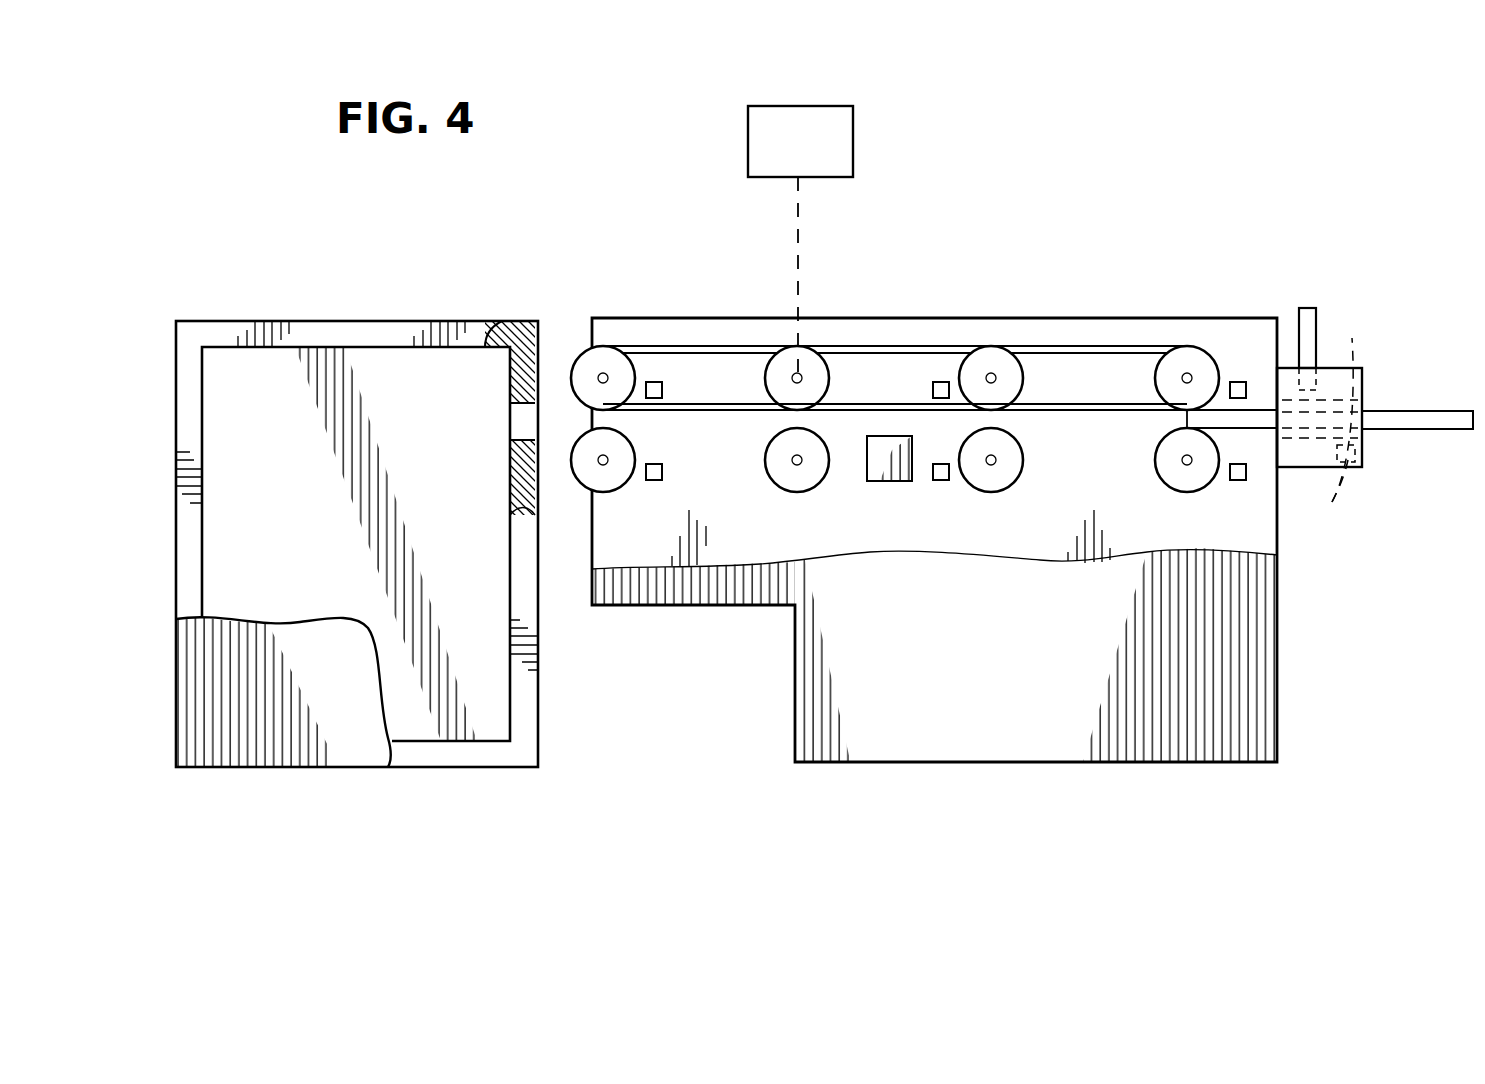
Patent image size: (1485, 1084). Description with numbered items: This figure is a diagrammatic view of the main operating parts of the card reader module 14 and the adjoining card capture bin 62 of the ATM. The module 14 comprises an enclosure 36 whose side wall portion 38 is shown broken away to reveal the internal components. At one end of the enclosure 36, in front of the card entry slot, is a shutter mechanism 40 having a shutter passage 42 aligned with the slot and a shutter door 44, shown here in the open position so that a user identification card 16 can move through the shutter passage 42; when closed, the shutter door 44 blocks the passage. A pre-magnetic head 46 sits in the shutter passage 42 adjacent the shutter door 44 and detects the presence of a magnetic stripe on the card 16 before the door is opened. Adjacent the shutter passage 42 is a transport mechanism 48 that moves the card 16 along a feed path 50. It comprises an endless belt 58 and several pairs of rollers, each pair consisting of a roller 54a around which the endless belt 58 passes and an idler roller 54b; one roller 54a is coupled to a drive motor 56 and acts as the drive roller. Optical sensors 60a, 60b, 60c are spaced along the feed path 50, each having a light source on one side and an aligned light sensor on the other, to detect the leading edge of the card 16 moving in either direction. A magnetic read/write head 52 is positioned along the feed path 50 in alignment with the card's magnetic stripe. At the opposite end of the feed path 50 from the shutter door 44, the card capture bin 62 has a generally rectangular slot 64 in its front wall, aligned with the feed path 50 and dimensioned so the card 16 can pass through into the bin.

The card reader module 14 is at (1182, 268).
The user identification card 16 is at (1411, 411).
The enclosure 36 is at (1062, 782).
The side wall portion 38 is at (808, 677).
The shutter mechanism 40 is at (1368, 394).
The shutter passage 42 is at (1352, 338).
The shutter door 44 is at (1308, 308).
The pre-magnetic head 46 is at (1332, 503).
The transport mechanism 48 is at (943, 348).
The feed path 50 is at (1012, 422).
The magnetic read/write head 52 is at (880, 483).
The roller 54a is at (583, 363).
The idler roller 54b is at (608, 493).
The drive motor 56 is at (853, 142).
The endless belt 58 is at (882, 352).
The optical sensor 60a is at (1248, 382).
The optical sensor 60b is at (931, 389).
The optical sensor 60c is at (662, 389).
The card capture bin 62 is at (281, 312).
The slot 64 is at (522, 420).